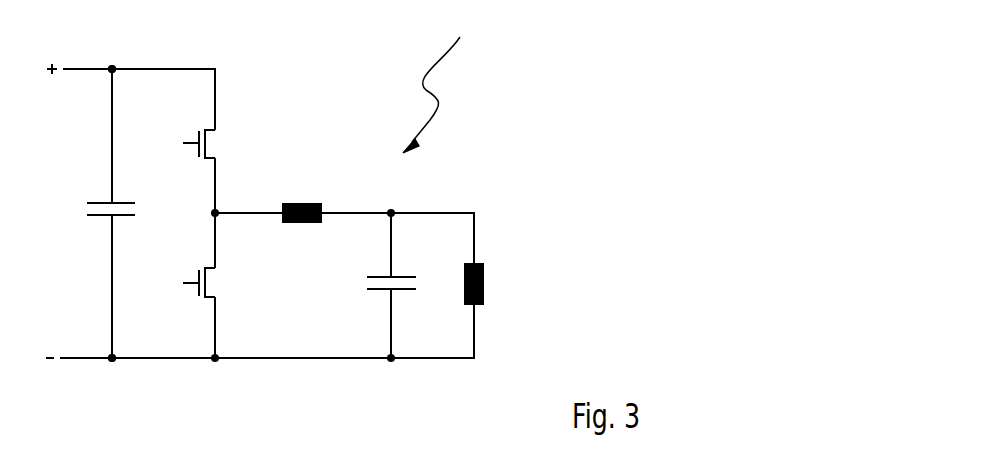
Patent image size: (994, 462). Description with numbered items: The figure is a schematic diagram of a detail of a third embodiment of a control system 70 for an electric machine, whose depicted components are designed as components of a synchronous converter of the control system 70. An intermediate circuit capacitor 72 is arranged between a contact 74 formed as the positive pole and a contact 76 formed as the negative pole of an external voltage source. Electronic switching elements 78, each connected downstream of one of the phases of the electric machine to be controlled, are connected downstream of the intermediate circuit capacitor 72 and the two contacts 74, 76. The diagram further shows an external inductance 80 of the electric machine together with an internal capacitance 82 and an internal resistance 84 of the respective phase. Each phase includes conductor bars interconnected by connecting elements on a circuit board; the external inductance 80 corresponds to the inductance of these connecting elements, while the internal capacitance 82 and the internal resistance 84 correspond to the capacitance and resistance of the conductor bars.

The control system 70 is at (443, 80).
The intermediate circuit capacitor 72 is at (87, 211).
The contact formed as positive pole 74 is at (112, 65).
The contact formed as negative pole 76 is at (112, 362).
The electronic switching elements 78 is at (207, 142).
The external inductance 80 is at (298, 203).
The internal capacitance 82 is at (367, 282).
The internal resistance 84 is at (484, 283).